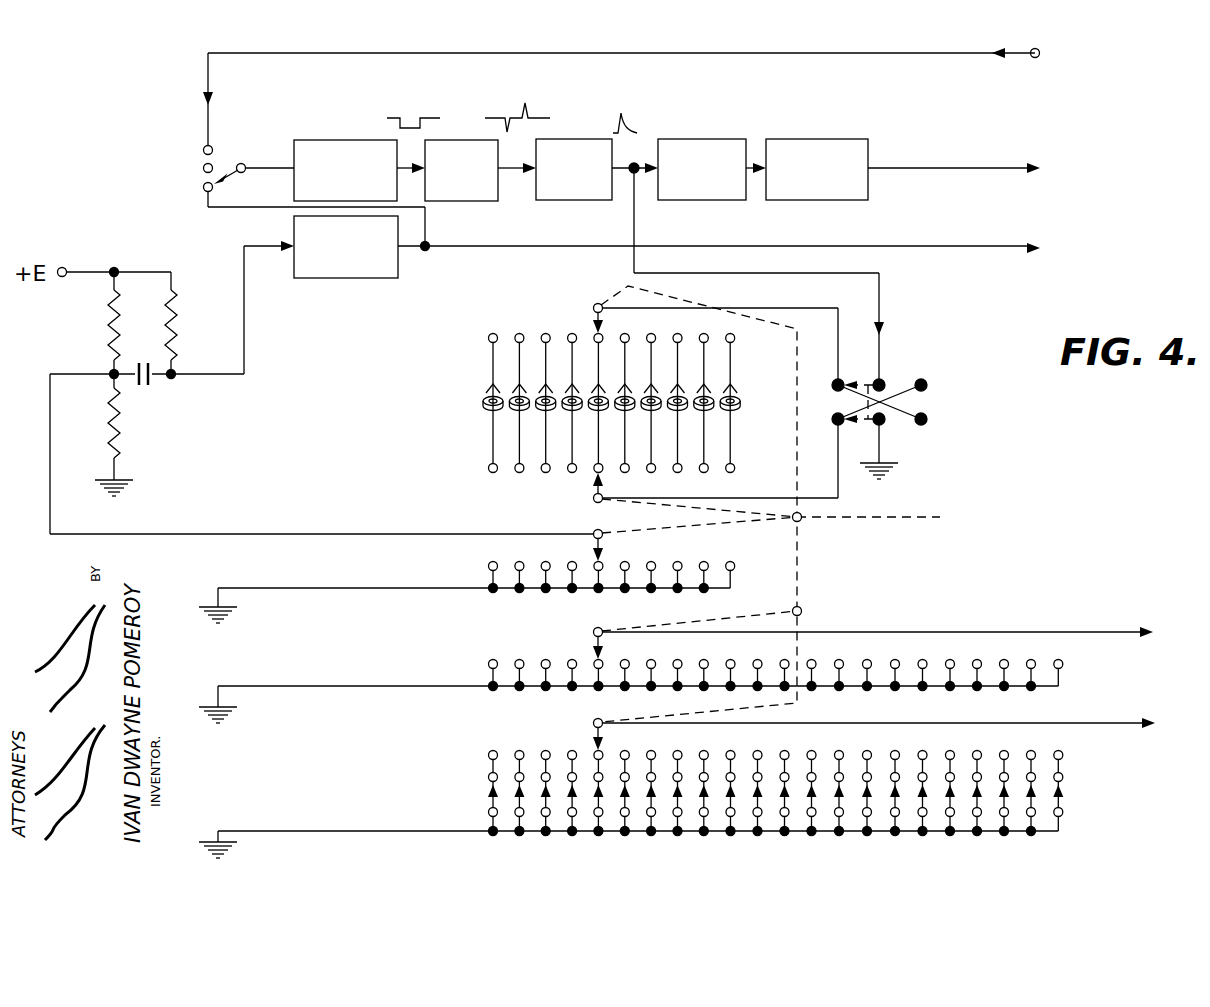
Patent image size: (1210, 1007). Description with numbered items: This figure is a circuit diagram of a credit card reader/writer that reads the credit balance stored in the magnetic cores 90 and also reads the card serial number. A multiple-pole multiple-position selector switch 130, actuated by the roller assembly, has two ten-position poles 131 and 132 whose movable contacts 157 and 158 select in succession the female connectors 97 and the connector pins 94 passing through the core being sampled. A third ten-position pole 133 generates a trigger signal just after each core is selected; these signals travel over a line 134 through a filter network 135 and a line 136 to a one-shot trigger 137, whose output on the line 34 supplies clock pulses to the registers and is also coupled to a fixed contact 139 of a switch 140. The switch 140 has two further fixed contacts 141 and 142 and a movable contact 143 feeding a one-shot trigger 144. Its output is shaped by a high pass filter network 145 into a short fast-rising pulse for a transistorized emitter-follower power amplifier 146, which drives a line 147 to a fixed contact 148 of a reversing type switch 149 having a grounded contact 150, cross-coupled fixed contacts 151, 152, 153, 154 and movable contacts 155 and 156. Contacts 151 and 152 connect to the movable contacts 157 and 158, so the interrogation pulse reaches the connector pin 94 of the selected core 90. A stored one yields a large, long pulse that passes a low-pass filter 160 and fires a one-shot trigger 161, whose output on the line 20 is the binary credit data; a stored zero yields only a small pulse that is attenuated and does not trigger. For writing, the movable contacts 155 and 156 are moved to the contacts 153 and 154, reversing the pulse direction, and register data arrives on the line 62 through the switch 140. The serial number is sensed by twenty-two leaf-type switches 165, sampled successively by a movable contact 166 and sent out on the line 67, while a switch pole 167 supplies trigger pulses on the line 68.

The line 20 is at (918, 168).
The line 34 is at (922, 247).
The line 62 is at (920, 53).
The line 67 is at (1075, 723).
The line 68 is at (1115, 630).
The magnetic cores 90 is at (483, 404).
The connector pins 94 is at (492, 440).
The female connectors 97 is at (485, 385).
The multiple-pole multiple-position selector switch 130 is at (803, 540).
The switch pole 131 is at (572, 313).
The switch pole 132 is at (577, 491).
The switch pole 133 is at (490, 551).
The line 134 is at (428, 521).
The filter network 135 is at (92, 346).
The line 136 is at (244, 358).
The one-shot trigger 137 is at (372, 279).
The fixed contact 139 is at (203, 187).
The switch 140 is at (228, 150).
The fixed contact 141 is at (204, 146).
The fixed contact 142 is at (203, 166).
The movable contact 143 is at (244, 171).
The one-shot trigger 144 is at (360, 125).
The high pass filter network 145 is at (478, 202).
The power amplifier 146 is at (578, 138).
The line 147 is at (882, 288).
The fixed contact 148 is at (884, 381).
The reversing type switch 149 is at (916, 429).
The grounded contact 150 is at (884, 424).
The fixed contact 151 is at (836, 381).
The fixed contact 152 is at (836, 424).
The fixed contact 153 is at (926, 383).
The fixed contact 154 is at (926, 418).
The movable contact 155 is at (857, 383).
The movable contact 156 is at (861, 425).
The movable contact 157 is at (604, 316).
The movable contact 158 is at (606, 487).
The low-pass filter 160 is at (702, 138).
The one-shot trigger 161 is at (808, 138).
The leaf-type switches 165 is at (517, 800).
The movable contact 166 is at (592, 734).
The switch pole 167 is at (568, 632).